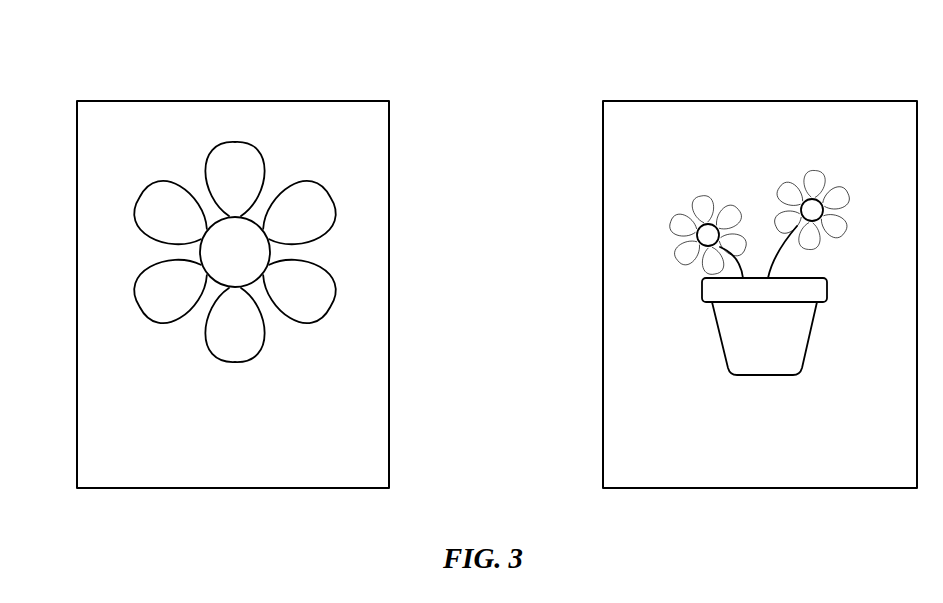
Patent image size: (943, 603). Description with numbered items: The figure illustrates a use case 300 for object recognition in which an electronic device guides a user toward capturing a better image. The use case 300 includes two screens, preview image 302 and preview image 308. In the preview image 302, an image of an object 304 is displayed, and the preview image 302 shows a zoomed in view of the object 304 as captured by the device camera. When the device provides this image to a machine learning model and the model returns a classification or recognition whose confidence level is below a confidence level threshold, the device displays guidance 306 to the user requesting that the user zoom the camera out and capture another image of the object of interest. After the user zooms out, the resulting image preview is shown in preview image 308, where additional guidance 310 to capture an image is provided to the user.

The use case 300 is at (99, 12).
The preview image 302 is at (236, 101).
The object 304 is at (134, 308).
The guidance 306 is at (135, 413).
The preview image 308 is at (761, 101).
The additional guidance 310 is at (638, 432).